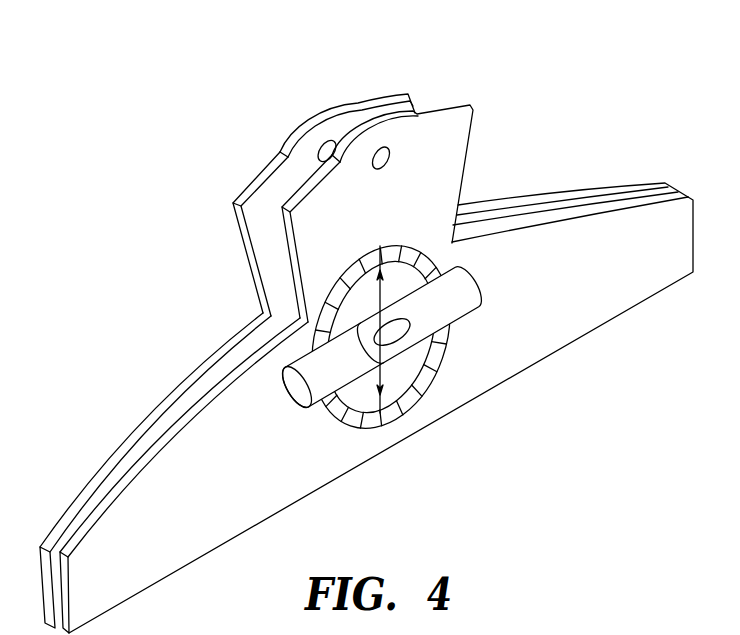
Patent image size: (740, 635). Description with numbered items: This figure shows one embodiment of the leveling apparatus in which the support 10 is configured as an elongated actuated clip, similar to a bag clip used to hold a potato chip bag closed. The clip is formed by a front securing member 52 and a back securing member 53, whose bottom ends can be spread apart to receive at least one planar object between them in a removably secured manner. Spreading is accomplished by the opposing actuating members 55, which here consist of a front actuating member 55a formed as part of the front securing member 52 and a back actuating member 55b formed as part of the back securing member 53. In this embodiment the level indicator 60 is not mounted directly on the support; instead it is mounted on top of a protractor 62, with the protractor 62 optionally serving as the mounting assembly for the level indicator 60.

The support 10 is at (352, 326).
The front securing member 52 is at (595, 310).
The back securing member 53 is at (123, 447).
The opposing actuating members 55 is at (355, 171).
The front actuating member 55a is at (412, 213).
The back actuating member 55b is at (258, 233).
The level indicator 60 is at (463, 308).
The protractor 62 is at (400, 375).